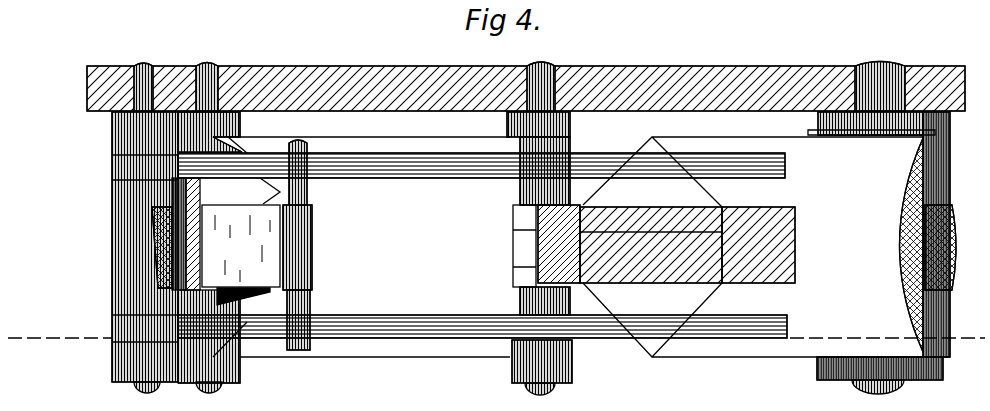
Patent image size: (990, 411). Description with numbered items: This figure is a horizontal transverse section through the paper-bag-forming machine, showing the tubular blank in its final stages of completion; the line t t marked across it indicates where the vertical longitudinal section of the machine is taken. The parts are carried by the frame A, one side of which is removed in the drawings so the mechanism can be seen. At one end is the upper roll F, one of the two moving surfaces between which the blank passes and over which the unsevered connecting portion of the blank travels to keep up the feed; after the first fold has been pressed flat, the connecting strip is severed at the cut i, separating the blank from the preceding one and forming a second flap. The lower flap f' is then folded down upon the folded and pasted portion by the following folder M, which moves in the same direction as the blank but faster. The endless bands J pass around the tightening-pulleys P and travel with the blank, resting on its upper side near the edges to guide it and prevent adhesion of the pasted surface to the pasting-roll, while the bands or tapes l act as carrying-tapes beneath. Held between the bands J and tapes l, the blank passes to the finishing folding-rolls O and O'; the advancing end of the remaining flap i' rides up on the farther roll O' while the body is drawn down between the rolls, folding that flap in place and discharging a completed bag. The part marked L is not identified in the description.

The frame A is at (526, 77).
The bands J is at (114, 170).
The finishing folding-roll O' is at (152, 254).
The finishing folding-roll O is at (226, 254).
The flap i' is at (132, 247).
The tightening-pulleys P is at (382, 247).
The flap f' is at (589, 255).
The following folder M is at (328, 234).
The central bolt L is at (522, 372).
The cut i is at (630, 233).
The bands or tapes l is at (766, 247).
The roll F is at (945, 379).
The section line t is at (496, 340).